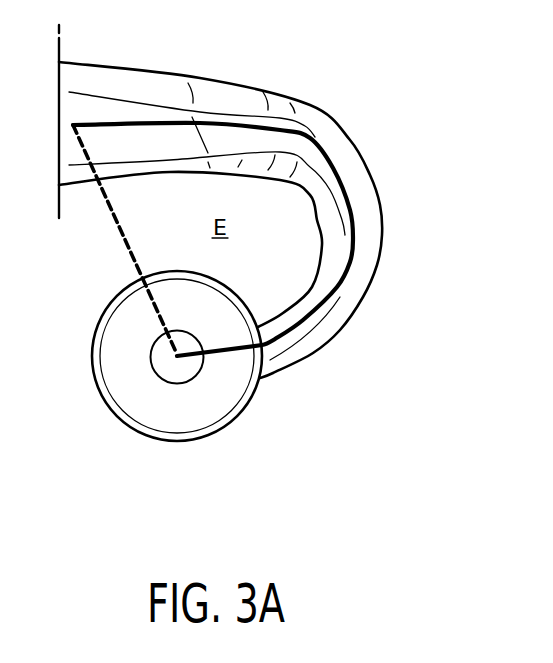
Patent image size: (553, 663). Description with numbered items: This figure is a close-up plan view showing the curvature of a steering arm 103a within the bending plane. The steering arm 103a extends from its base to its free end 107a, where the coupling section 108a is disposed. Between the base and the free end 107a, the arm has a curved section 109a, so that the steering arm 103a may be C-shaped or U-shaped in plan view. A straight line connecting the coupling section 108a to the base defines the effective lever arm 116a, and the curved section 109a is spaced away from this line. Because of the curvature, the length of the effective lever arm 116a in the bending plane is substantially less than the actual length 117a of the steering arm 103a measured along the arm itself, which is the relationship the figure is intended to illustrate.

The steering arm 103a is at (152, 82).
The curved section 109a is at (398, 199).
The actual length 117a is at (350, 255).
The effective lever arm 116a is at (115, 232).
The free end 107a is at (110, 455).
The coupling section 108a is at (187, 458).